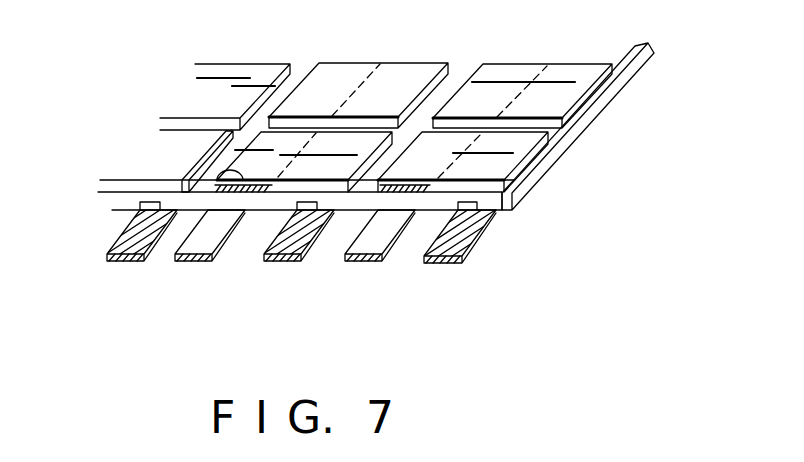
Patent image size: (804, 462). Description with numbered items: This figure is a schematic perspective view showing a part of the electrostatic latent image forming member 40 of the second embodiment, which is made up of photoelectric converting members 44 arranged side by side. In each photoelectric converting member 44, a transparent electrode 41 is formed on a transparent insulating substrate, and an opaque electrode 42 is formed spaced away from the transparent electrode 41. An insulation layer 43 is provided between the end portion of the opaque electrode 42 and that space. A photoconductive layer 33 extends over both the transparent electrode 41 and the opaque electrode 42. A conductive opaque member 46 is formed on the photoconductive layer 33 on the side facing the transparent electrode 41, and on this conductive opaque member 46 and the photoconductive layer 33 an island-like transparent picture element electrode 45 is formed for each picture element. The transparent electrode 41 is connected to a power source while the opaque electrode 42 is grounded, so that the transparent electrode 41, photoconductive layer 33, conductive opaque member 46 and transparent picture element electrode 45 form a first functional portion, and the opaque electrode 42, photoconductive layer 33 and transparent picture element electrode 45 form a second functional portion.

The photoconductive layer 33 is at (122, 198).
The electrostatic latent image forming member 40 is at (159, 83).
The transparent electrode 41 is at (200, 248).
The opaque electrode 42 is at (121, 261).
The insulation layer 43 is at (140, 208).
The photoelectric converting member 44 is at (587, 62).
The transparent picture element electrode 45 is at (402, 75).
The conductive opaque member 46 is at (224, 178).